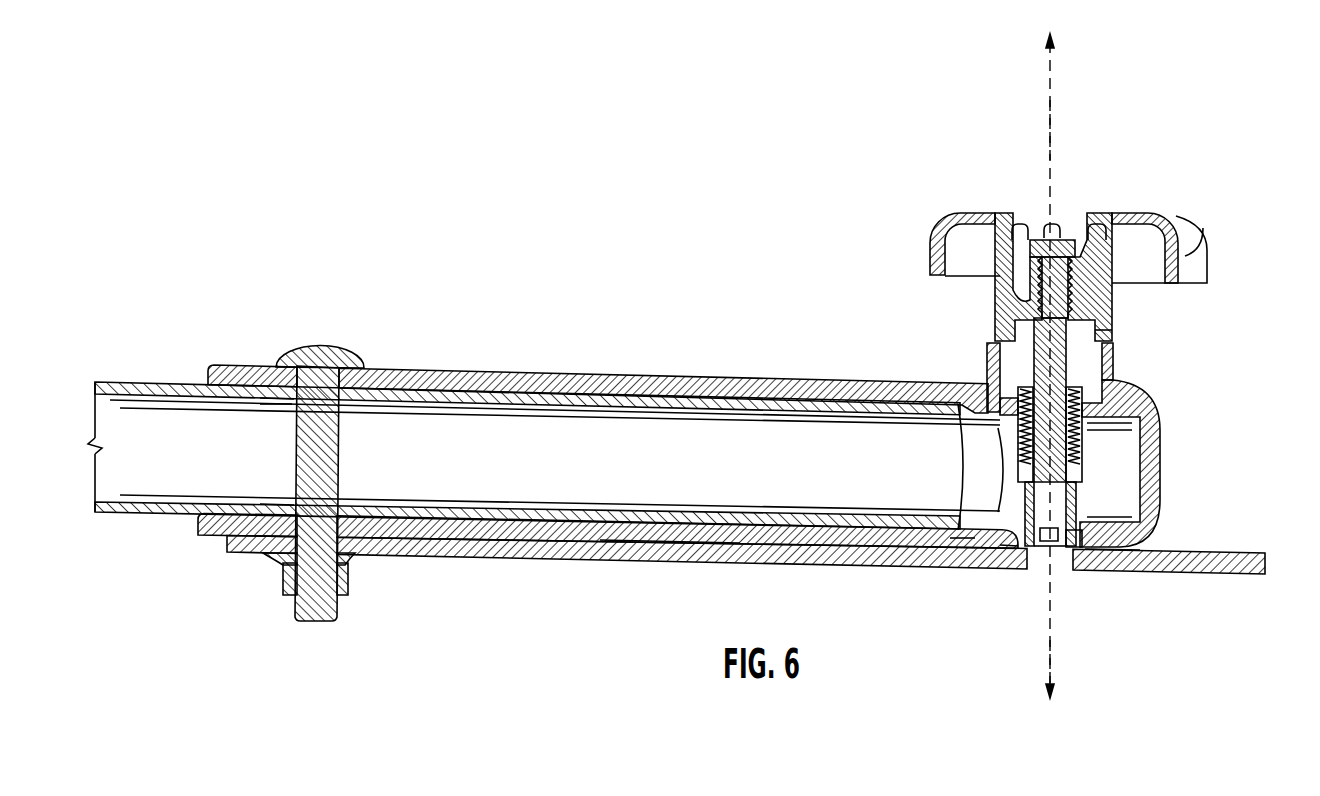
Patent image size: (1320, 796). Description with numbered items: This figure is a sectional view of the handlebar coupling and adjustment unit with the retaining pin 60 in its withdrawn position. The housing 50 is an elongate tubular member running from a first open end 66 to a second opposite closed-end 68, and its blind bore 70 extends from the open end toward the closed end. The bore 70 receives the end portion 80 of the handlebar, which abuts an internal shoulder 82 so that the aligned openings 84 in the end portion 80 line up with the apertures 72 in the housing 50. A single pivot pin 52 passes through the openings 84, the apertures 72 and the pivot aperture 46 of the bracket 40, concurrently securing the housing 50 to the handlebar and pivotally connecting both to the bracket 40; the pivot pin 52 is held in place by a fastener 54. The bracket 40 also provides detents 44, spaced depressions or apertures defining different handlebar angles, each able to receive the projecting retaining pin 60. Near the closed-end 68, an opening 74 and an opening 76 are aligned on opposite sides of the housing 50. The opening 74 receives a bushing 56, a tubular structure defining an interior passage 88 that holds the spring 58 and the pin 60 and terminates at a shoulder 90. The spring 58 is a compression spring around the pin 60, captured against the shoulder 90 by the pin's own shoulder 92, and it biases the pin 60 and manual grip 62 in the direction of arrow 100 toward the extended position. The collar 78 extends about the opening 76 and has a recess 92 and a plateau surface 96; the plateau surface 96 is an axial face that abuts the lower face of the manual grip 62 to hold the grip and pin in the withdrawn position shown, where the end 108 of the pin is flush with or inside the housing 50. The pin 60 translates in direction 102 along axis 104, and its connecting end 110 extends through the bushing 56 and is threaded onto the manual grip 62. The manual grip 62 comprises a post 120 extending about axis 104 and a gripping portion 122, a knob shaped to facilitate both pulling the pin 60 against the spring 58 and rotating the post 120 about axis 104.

The bracket 40 is at (570, 565).
The detents 44 is at (1066, 545).
The pivot aperture 46 is at (262, 556).
The housing 50 is at (690, 378).
The pivot pin 52 is at (296, 460).
The fastener 54 is at (285, 593).
The bushing 56 is at (1115, 553).
The spring 58 is at (1005, 455).
The retaining pin 60 is at (1083, 487).
The manual grip 62 is at (1180, 227).
The first open end 66 is at (194, 370).
The second opposite closed-end 68 is at (1197, 380).
The bore 70 is at (550, 372).
The apertures 72 is at (356, 364).
The opening 74 is at (1000, 546).
The opening 76 is at (986, 378).
The collar 78 is at (1115, 388).
The end portion 80 is at (725, 532).
The internal shoulder 82 is at (965, 538).
The openings 84 is at (291, 399).
The interior passage 88 is at (1083, 448).
The shoulder 90 is at (972, 413).
The recess 92 is at (1003, 540).
The plateau surface 96 is at (1114, 333).
The arrow 100 is at (1050, 672).
The direction 102 is at (1052, 56).
The axis 104 is at (1052, 126).
The end 108 is at (1080, 547).
The connecting end 110 is at (1038, 300).
The post 120 is at (998, 352).
The gripping portion 122 is at (1185, 254).